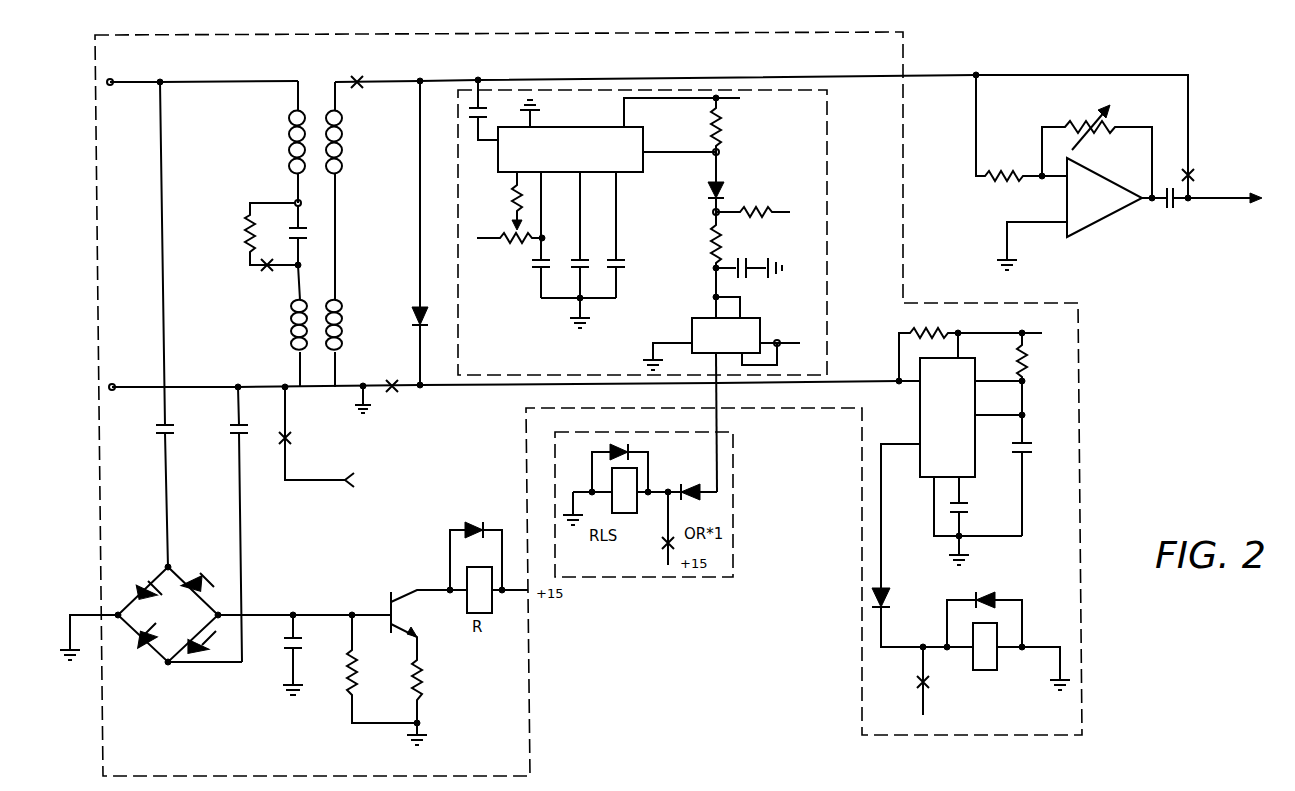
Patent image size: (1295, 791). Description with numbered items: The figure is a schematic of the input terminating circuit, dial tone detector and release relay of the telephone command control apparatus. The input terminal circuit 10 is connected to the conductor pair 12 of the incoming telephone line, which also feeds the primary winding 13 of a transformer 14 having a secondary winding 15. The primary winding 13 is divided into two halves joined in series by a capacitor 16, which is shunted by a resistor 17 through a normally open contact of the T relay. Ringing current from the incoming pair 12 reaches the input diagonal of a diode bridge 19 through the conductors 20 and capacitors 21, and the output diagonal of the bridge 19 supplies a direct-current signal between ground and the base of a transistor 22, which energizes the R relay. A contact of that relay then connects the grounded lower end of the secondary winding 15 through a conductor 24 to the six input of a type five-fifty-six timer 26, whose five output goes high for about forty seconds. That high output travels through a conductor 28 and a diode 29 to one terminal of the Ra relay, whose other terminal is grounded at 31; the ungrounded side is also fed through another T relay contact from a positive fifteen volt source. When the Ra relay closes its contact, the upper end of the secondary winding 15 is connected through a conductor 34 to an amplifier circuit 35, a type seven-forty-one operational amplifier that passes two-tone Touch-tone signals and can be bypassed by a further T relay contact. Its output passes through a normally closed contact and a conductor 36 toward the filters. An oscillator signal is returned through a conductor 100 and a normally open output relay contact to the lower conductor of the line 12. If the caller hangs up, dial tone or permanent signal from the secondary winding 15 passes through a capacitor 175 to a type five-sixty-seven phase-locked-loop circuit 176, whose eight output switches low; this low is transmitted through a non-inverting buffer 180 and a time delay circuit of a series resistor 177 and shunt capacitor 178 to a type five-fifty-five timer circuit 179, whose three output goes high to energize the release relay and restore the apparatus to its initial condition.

The input terminal circuit 10 is at (95, 210).
The conductor pair 12 is at (136, 84).
The primary winding 13 is at (288, 140).
The transformer 14 is at (308, 212).
The secondary winding 15 is at (344, 141).
The capacitor 16 is at (286, 224).
The resistor 17 is at (242, 233).
The diode bridge 19 is at (185, 634).
The conductors 20 is at (238, 407).
The capacitors 21 is at (228, 462).
The transistor 22 is at (386, 602).
The conductor 24 is at (505, 385).
The timer 26 is at (920, 415).
The conductor 28 is at (882, 556).
The diode 29 is at (895, 594).
The ground 31 is at (1056, 694).
The conductor 34 is at (676, 80).
The amplifier circuit 35 is at (1048, 200).
The conductor 36 is at (1233, 204).
The conductor 100 is at (322, 480).
The capacitor 175 is at (489, 102).
The phase-locked-loop circuit 176 is at (550, 130).
The series resistor 177 is at (712, 237).
The shunt capacitor 178 is at (757, 263).
The timer circuit 179 is at (763, 322).
The non-inverting buffer 180 is at (730, 193).